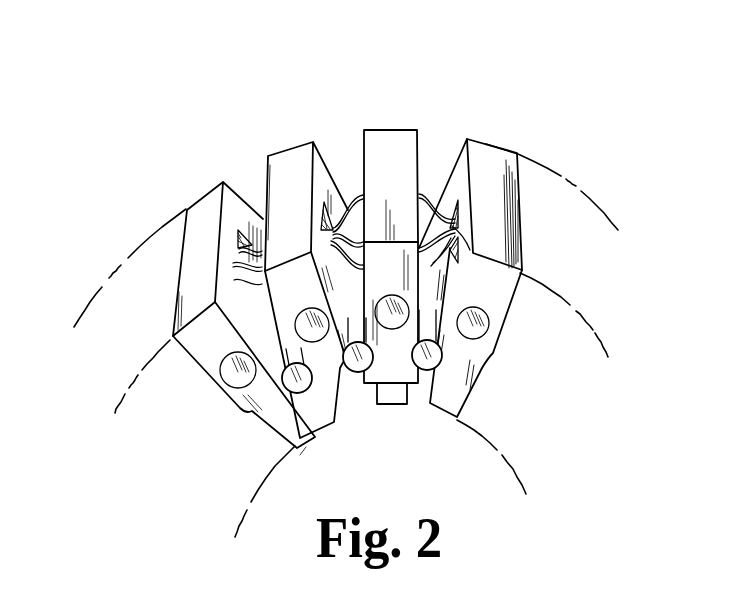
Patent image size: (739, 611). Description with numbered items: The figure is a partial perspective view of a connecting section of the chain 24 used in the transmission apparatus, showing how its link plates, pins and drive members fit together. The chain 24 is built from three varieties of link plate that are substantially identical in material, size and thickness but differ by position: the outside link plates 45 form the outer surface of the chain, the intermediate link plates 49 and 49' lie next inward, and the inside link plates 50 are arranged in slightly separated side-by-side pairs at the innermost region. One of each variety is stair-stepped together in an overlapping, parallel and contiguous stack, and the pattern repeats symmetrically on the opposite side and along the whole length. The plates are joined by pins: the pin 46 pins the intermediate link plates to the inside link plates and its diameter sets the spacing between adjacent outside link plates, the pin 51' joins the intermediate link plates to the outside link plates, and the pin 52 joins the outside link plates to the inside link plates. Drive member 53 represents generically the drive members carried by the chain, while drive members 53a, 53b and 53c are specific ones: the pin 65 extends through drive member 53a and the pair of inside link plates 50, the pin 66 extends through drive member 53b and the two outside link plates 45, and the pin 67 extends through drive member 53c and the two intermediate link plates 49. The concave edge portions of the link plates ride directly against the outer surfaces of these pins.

The chain 24 is at (494, 65).
The drive member 53 is at (203, 197).
The drive member 53a is at (288, 147).
The drive member 53b is at (392, 129).
The drive member 53c is at (490, 145).
The outside link plate 45 is at (430, 200).
The intermediate link plate 49 is at (202, 257).
The intermediate link plate 49' is at (517, 226).
The inside link plate 50 is at (322, 232).
The pin 46 is at (307, 384).
The pin 51' is at (428, 374).
The pin 52 is at (362, 368).
The pin 65 is at (367, 384).
The pin 66 is at (393, 326).
The pin 67 is at (233, 375).